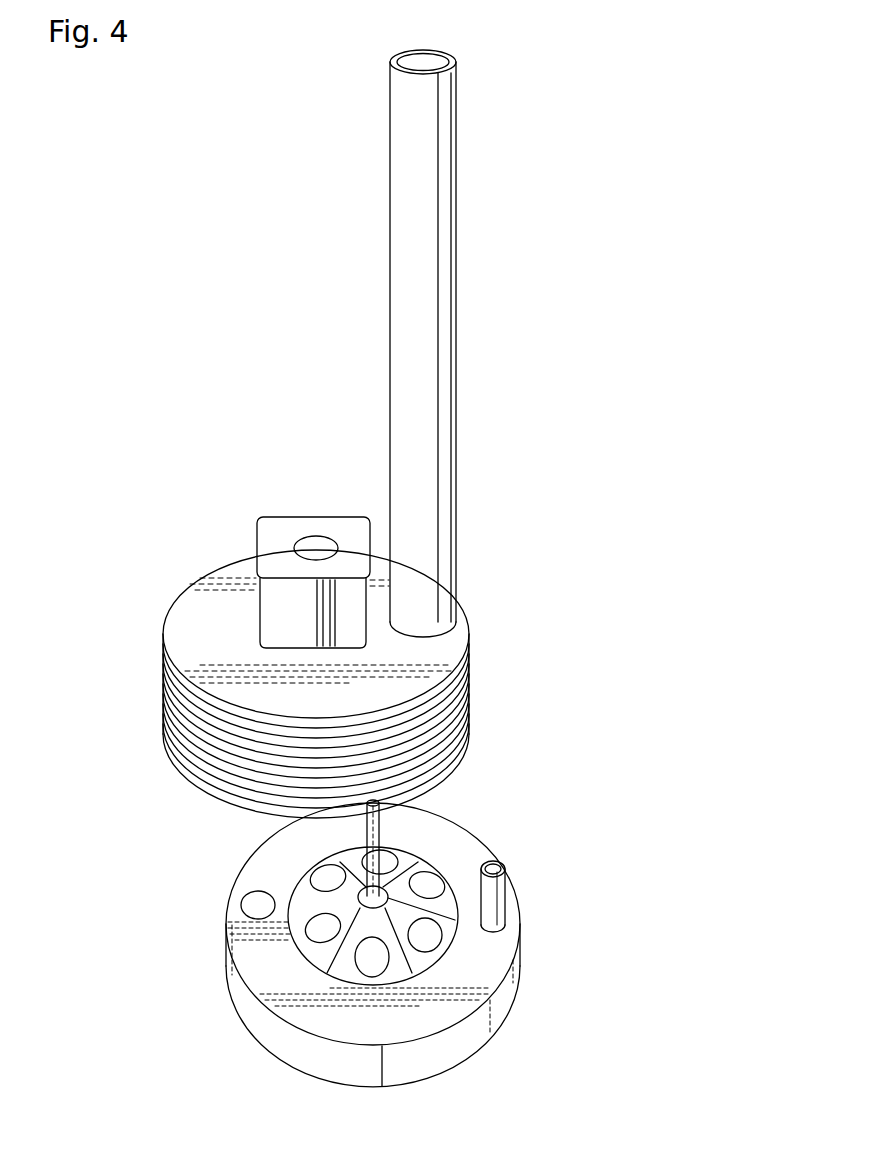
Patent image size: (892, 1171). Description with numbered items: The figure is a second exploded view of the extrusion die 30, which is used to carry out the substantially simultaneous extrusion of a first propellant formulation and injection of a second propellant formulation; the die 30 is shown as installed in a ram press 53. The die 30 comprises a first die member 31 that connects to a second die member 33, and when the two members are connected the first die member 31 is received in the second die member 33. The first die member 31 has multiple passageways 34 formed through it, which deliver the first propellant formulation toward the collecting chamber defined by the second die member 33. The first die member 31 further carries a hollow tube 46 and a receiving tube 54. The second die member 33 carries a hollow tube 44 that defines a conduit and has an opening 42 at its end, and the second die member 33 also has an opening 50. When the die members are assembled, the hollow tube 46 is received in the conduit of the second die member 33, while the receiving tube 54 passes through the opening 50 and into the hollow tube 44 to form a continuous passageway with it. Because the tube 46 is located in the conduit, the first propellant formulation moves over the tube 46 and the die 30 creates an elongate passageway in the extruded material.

The extrusion die 30 is at (620, 546).
The first die member 31 is at (363, 1020).
The second die member 33 is at (215, 613).
The passageways 34 is at (428, 878).
The opening 42 is at (430, 62).
The hollow tube 44 is at (430, 367).
The hollow tube 46 is at (366, 839).
The opening 50 is at (316, 548).
The ram press 53 is at (238, 768).
The receiving tube 54 is at (493, 898).